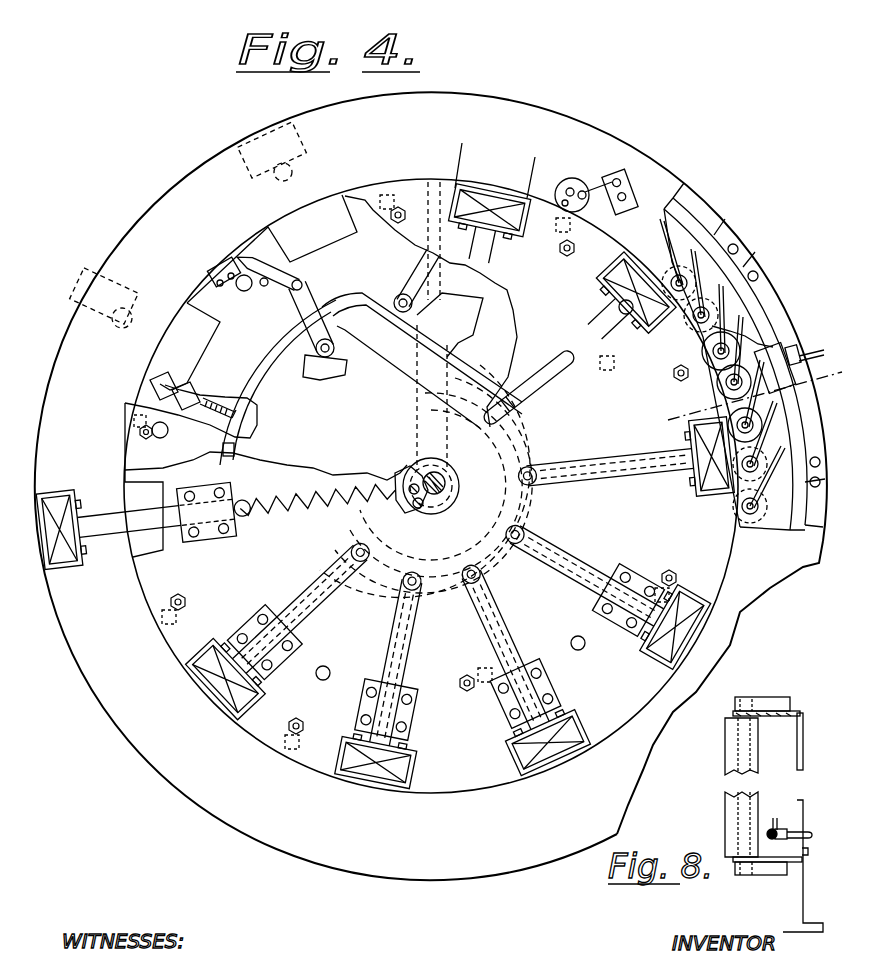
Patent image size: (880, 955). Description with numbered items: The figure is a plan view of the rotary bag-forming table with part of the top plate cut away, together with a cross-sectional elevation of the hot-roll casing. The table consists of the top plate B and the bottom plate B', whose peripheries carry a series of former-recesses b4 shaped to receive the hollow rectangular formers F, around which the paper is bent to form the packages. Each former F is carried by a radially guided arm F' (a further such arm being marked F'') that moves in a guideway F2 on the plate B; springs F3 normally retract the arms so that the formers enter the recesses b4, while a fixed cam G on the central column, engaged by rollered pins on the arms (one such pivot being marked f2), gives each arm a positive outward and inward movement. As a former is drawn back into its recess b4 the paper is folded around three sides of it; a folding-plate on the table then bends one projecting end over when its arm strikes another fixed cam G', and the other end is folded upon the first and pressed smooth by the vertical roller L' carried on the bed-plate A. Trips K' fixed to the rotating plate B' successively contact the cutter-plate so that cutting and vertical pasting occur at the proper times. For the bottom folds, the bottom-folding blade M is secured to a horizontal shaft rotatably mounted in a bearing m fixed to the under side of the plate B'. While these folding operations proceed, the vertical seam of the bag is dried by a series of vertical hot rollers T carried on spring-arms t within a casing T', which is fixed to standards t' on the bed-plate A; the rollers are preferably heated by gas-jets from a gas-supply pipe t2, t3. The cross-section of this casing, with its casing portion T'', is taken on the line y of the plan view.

In FIG. 4, the bed-plate A is at (431, 486).
In FIG. 4, the top plate B is at (485, 324).
In FIG. 4, the bottom plate B' is at (338, 311).
In FIG. 4, the former-recess b4 is at (266, 388).
In FIG. 4, the former F is at (370, 477).
In FIG. 4, the former-arm F' is at (217, 510).
In FIG. 4, the arm F'' is at (460, 603).
In FIG. 4, the guideway F2 is at (240, 528).
In FIG. 4, the spring F3 is at (360, 482).
In FIG. 4, the pivot pin f2 is at (522, 534).
In FIG. 4, the fixed cam G is at (449, 360).
In FIG. 4, the fixed cam G' is at (423, 292).
In FIG. 4, the trip K' is at (276, 303).
In FIG. 4, the vertical roller L' is at (583, 180).
In FIG. 4, the bottom-folding blade M is at (150, 388).
In FIG. 4, the bearing m is at (192, 396).
In FIG. 4, the vertical hot roller T is at (722, 371).
In FIG. 8, the vertical hot roller T is at (728, 787).
In FIG. 4, the casing T' is at (716, 364).
In FIG. 8, the track plate T'' is at (766, 731).
In FIG. 4, the spring-arm t is at (769, 302).
In FIG. 4, the standard t' is at (749, 355).
In FIG. 8, the standard t' is at (778, 822).
In FIG. 4, the gas-supply pipe t2 is at (800, 352).
In FIG. 8, the gas-supply pipe t2 is at (805, 832).
In FIG. 4, the gas-supply pipe t3 is at (715, 260).
In FIG. 8, the gas-supply pipe t3 is at (777, 826).
In FIG. 4, the section line y is at (746, 393).